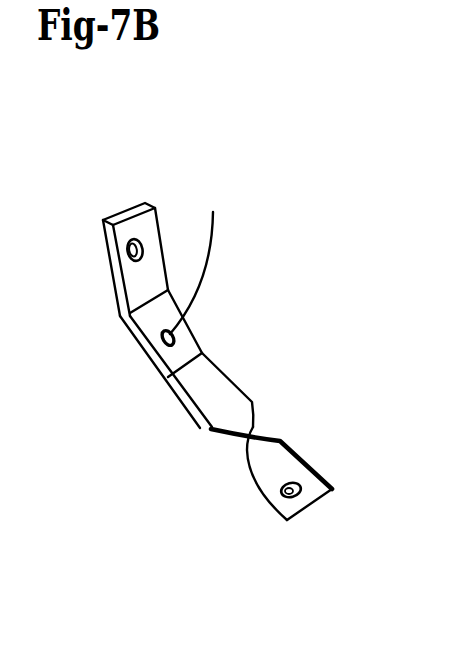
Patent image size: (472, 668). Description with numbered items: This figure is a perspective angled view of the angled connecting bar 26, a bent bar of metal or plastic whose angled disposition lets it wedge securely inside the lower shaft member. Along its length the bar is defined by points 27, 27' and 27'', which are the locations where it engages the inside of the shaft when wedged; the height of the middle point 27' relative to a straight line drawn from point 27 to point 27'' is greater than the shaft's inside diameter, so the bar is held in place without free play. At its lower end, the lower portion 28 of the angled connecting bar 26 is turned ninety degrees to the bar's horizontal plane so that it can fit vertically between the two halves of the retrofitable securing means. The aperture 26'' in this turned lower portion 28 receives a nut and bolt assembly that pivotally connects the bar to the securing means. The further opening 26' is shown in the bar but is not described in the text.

The angled connecting bar 26 is at (229, 280).
The upper aperture 26' is at (193, 208).
The aperture 26'' is at (246, 526).
The engagement point 27 is at (97, 225).
The engagement point 27' is at (126, 359).
The engagement point 27'' is at (156, 398).
The lower portion 28 is at (277, 437).